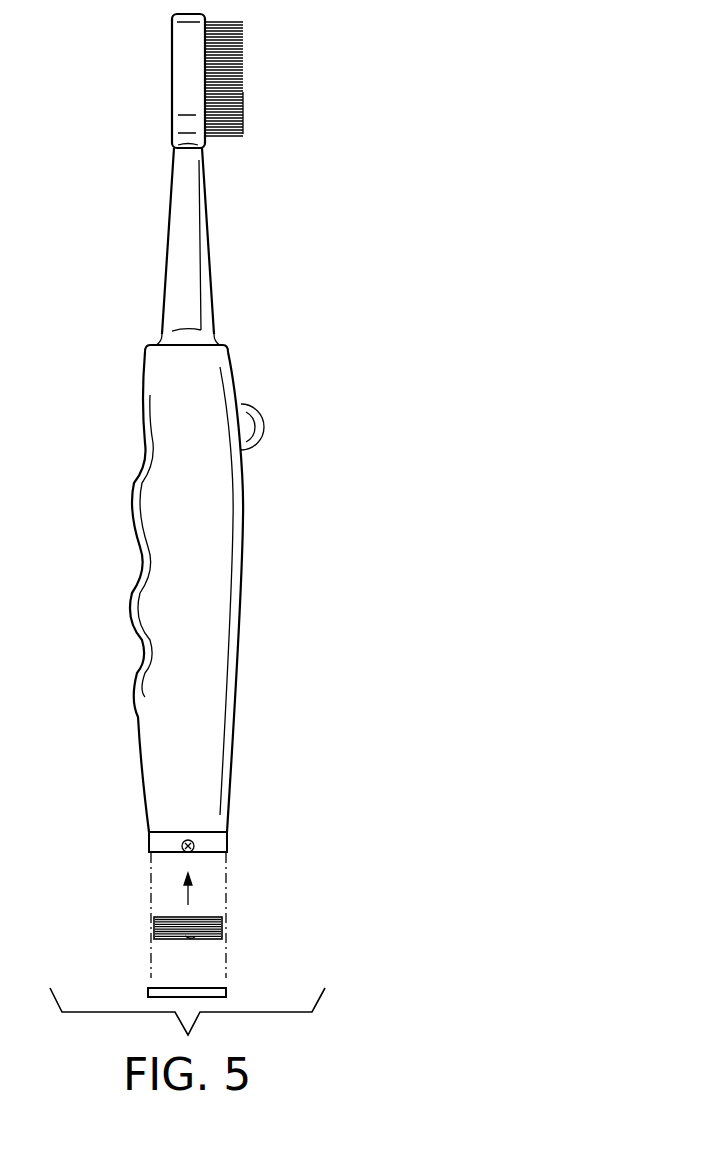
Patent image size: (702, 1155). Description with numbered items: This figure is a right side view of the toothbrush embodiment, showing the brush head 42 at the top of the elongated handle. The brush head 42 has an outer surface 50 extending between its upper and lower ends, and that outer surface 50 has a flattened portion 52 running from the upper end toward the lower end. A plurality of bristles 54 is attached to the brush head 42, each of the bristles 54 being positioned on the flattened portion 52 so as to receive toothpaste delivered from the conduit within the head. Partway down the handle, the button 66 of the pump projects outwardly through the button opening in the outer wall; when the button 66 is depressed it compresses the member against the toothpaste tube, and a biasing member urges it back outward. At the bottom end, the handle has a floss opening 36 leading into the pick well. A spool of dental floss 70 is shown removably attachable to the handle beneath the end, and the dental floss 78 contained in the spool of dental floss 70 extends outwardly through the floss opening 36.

The brush head 42 is at (148, 145).
The outer surface 50 is at (186, 252).
The flattened portion 52 is at (212, 63).
The bristles 54 is at (246, 97).
The button 66 is at (253, 427).
The floss opening 36 is at (193, 840).
The spool of dental floss 70 is at (152, 920).
The dental floss 78 is at (187, 937).